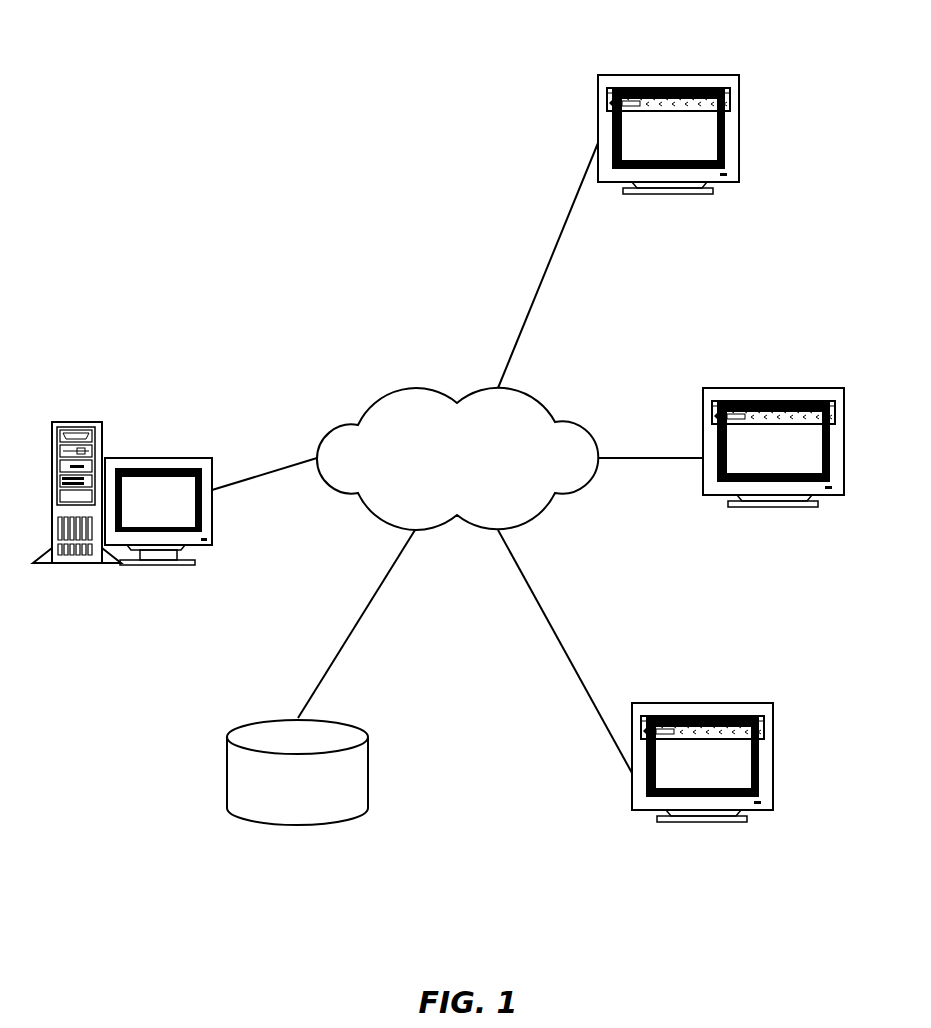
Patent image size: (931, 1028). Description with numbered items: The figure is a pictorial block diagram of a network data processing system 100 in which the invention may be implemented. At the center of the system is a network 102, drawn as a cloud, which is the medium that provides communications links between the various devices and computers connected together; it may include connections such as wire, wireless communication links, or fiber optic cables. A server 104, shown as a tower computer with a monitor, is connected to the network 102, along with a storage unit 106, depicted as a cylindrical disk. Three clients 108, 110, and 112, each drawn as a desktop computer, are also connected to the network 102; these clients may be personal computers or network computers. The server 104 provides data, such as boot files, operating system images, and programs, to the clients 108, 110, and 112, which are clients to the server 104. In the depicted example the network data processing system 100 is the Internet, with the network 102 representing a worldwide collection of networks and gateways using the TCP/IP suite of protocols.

The network data processing system 100 is at (474, 777).
The network 102 is at (415, 388).
The server 104 is at (122, 462).
The storage unit 106 is at (280, 815).
The client 108 is at (608, 85).
The client 110 is at (713, 397).
The client 112 is at (765, 712).